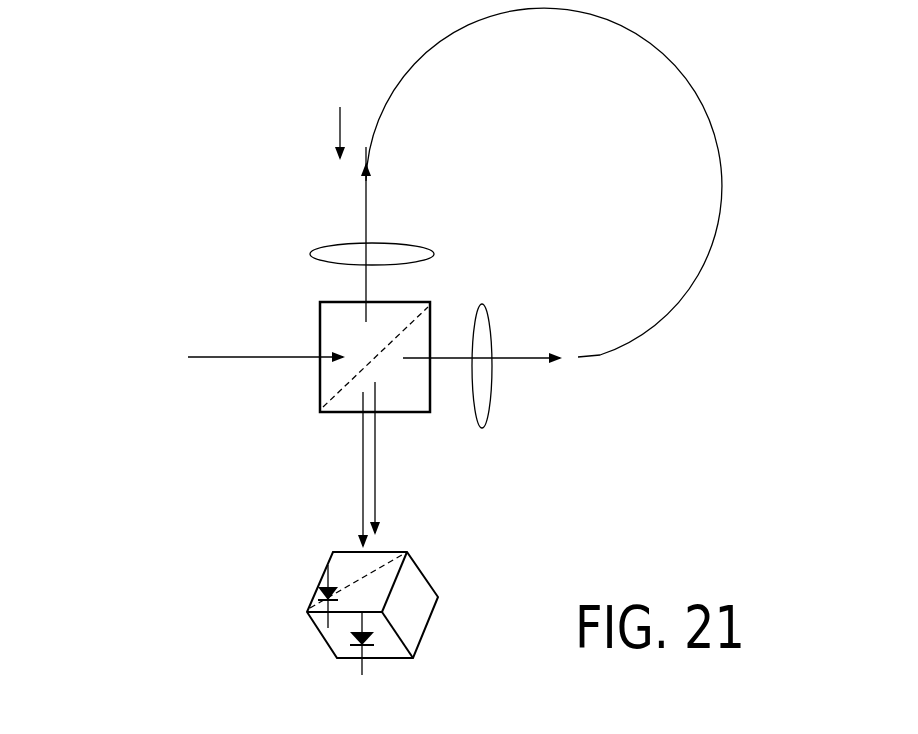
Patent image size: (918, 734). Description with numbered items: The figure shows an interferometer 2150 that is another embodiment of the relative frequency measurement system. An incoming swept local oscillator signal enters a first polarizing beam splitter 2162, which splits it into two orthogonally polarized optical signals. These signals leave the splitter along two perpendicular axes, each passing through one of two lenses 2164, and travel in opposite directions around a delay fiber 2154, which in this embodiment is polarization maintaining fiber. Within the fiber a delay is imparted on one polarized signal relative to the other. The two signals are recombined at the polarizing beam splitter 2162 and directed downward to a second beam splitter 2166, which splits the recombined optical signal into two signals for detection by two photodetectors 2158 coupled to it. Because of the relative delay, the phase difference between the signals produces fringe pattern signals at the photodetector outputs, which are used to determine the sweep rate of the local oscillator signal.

The interferometer 2150 is at (178, 84).
The delay fiber 2154 is at (710, 118).
The photodetectors 2158 is at (347, 637).
The first polarizing beam splitter 2162 is at (320, 395).
The lenses 2164 is at (482, 304).
The second beam splitter 2166 is at (410, 556).